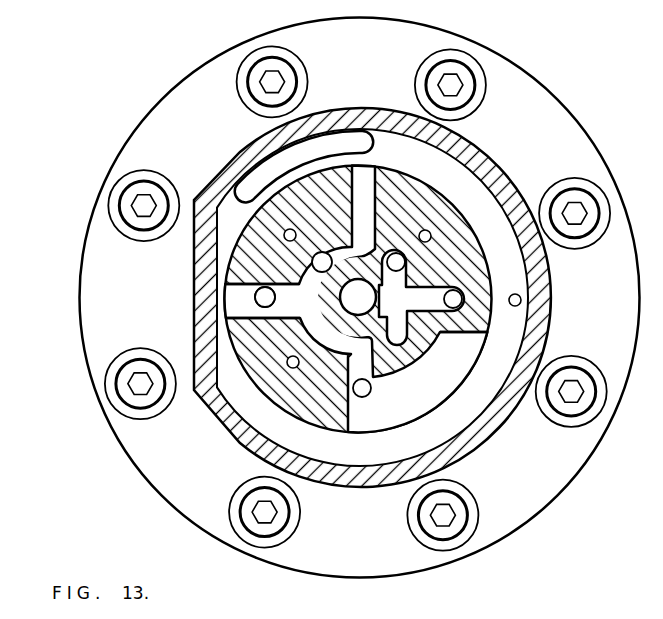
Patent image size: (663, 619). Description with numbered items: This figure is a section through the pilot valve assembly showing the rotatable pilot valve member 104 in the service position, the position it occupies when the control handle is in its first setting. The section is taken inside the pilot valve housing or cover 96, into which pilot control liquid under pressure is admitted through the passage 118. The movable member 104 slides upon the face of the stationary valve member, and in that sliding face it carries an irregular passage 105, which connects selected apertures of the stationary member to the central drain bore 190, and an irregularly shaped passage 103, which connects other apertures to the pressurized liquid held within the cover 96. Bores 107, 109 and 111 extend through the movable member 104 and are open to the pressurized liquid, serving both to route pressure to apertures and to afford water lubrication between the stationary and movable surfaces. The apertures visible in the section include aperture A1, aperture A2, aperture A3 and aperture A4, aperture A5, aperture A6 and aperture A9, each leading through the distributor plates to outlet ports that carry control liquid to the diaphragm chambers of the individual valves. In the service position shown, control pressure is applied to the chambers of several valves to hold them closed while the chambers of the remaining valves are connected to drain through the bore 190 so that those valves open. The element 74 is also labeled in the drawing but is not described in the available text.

The pilot valve housing or cover 96 is at (503, 178).
The valve plate 74 is at (465, 372).
The passage 118 is at (258, 184).
The bore 111 is at (287, 233).
The bore 109 is at (431, 234).
The bore 107 is at (290, 368).
The irregular passage 105 is at (416, 282).
The rotatable pilot valve member 104 is at (472, 328).
The irregularly shaped passage 103 is at (312, 312).
The central bore 190 is at (355, 306).
The aperture A1 is at (396, 253).
The aperture A2 is at (371, 389).
The aperture A3 is at (265, 287).
The aperture A4 is at (265, 287).
The aperture A5 is at (457, 291).
The aperture A6 is at (521, 302).
The aperture A9 is at (322, 252).